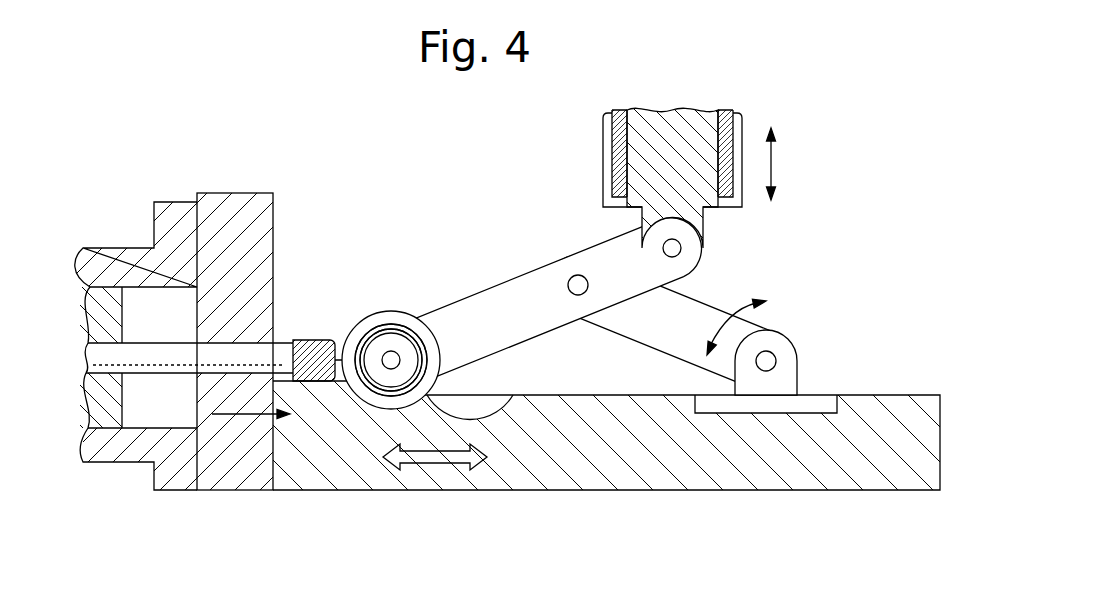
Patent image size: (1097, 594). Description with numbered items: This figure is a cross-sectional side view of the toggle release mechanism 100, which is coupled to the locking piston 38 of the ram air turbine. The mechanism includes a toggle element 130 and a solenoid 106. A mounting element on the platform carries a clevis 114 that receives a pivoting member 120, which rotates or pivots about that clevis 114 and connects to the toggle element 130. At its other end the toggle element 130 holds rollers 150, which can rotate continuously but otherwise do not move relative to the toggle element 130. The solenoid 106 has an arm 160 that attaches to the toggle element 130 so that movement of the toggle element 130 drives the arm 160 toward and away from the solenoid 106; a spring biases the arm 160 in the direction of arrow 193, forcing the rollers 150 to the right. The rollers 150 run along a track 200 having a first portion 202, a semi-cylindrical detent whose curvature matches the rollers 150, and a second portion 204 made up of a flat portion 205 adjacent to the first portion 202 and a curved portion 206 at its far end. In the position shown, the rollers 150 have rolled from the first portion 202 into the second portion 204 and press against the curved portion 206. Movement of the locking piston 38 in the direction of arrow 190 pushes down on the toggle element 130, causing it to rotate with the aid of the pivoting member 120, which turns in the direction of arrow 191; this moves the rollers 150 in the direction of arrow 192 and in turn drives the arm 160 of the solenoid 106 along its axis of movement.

The toggle release mechanism 100 is at (340, 159).
The solenoid 106 is at (113, 262).
The arm 160 is at (152, 358).
The arrow 193 is at (227, 415).
The second portion 204 is at (355, 412).
The arrow 192 is at (441, 470).
The track 200 is at (513, 438).
The first portion 202 is at (483, 400).
The flat portion 205 is at (424, 398).
The curved portion 206 is at (368, 347).
The rollers 150 is at (380, 318).
The toggle element 130 is at (523, 297).
The locking piston 38 is at (663, 147).
The arrow 190 is at (773, 165).
The arrow 191 is at (742, 303).
The pivoting members 120 is at (648, 332).
The clevis 114 is at (787, 375).